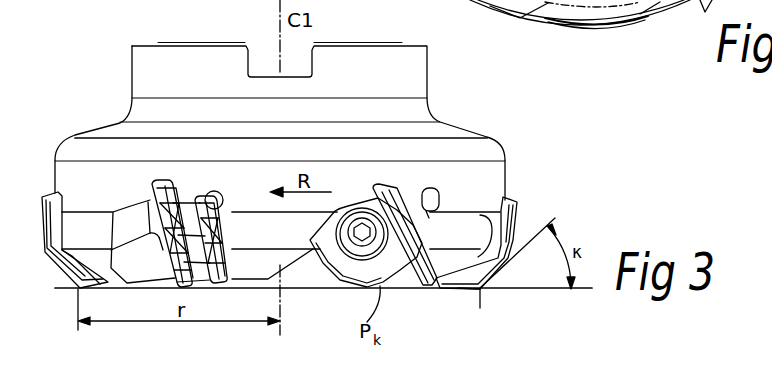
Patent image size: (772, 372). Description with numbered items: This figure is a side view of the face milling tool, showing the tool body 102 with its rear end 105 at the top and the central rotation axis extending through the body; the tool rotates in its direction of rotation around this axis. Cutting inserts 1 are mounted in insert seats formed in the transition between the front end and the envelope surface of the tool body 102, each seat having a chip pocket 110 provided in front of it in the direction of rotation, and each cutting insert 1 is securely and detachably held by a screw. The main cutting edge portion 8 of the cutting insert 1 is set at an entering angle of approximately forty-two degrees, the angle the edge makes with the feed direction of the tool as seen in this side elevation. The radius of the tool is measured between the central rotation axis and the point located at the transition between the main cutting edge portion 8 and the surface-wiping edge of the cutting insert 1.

The tool body 102 is at (417, 70).
The rear end 105 is at (200, 43).
The chip pocket 110 is at (130, 217).
The cutting insert 1 is at (515, 212).
The main cutting edge portion 8 is at (498, 272).